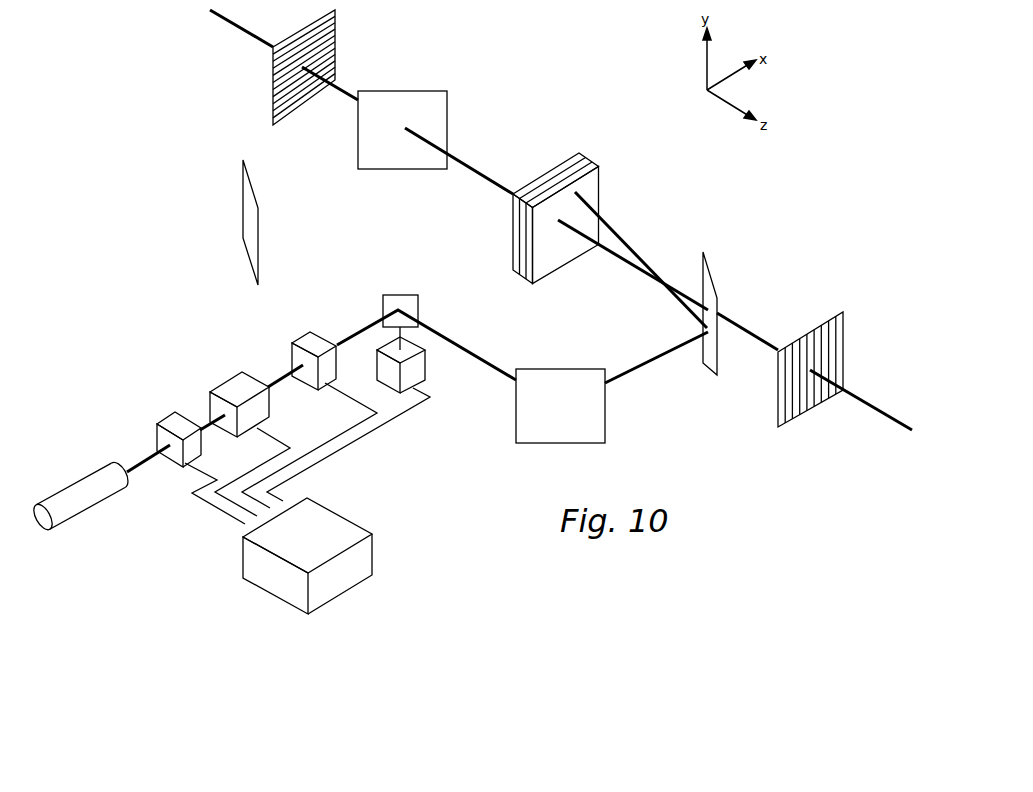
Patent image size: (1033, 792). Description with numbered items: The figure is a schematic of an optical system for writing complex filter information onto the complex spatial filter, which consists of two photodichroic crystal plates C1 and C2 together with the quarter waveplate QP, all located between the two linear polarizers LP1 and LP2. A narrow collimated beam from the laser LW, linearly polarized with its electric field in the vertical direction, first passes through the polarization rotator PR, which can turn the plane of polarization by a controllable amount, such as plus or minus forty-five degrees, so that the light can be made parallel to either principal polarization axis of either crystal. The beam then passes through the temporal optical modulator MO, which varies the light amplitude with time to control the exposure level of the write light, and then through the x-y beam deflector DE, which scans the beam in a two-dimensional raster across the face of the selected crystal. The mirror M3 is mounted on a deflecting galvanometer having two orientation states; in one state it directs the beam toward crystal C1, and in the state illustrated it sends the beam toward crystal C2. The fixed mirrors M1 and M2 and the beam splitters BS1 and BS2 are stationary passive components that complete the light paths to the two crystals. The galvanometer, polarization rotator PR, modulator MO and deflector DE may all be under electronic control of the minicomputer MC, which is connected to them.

The linear polarizer LP1 is at (321, 67).
The beam splitter BS1 is at (410, 117).
The photodichroic crystal plate C1 is at (533, 206).
The quarter waveplate QP is at (533, 218).
The photodichroic crystal plate C2 is at (633, 238).
The beam splitter BS2 is at (728, 313).
The linear polarizer LP2 is at (829, 369).
The fixed mirror M1 is at (233, 222).
The fixed mirror M2 is at (574, 406).
The mirror mounted on deflecting galvanometer M3 is at (414, 305).
The x-y beam deflector DE is at (307, 355).
The temporal optical modulator MO is at (236, 399).
The polarization rotator PR is at (172, 433).
The laser LW is at (81, 495).
The minicomputer MC is at (307, 556).